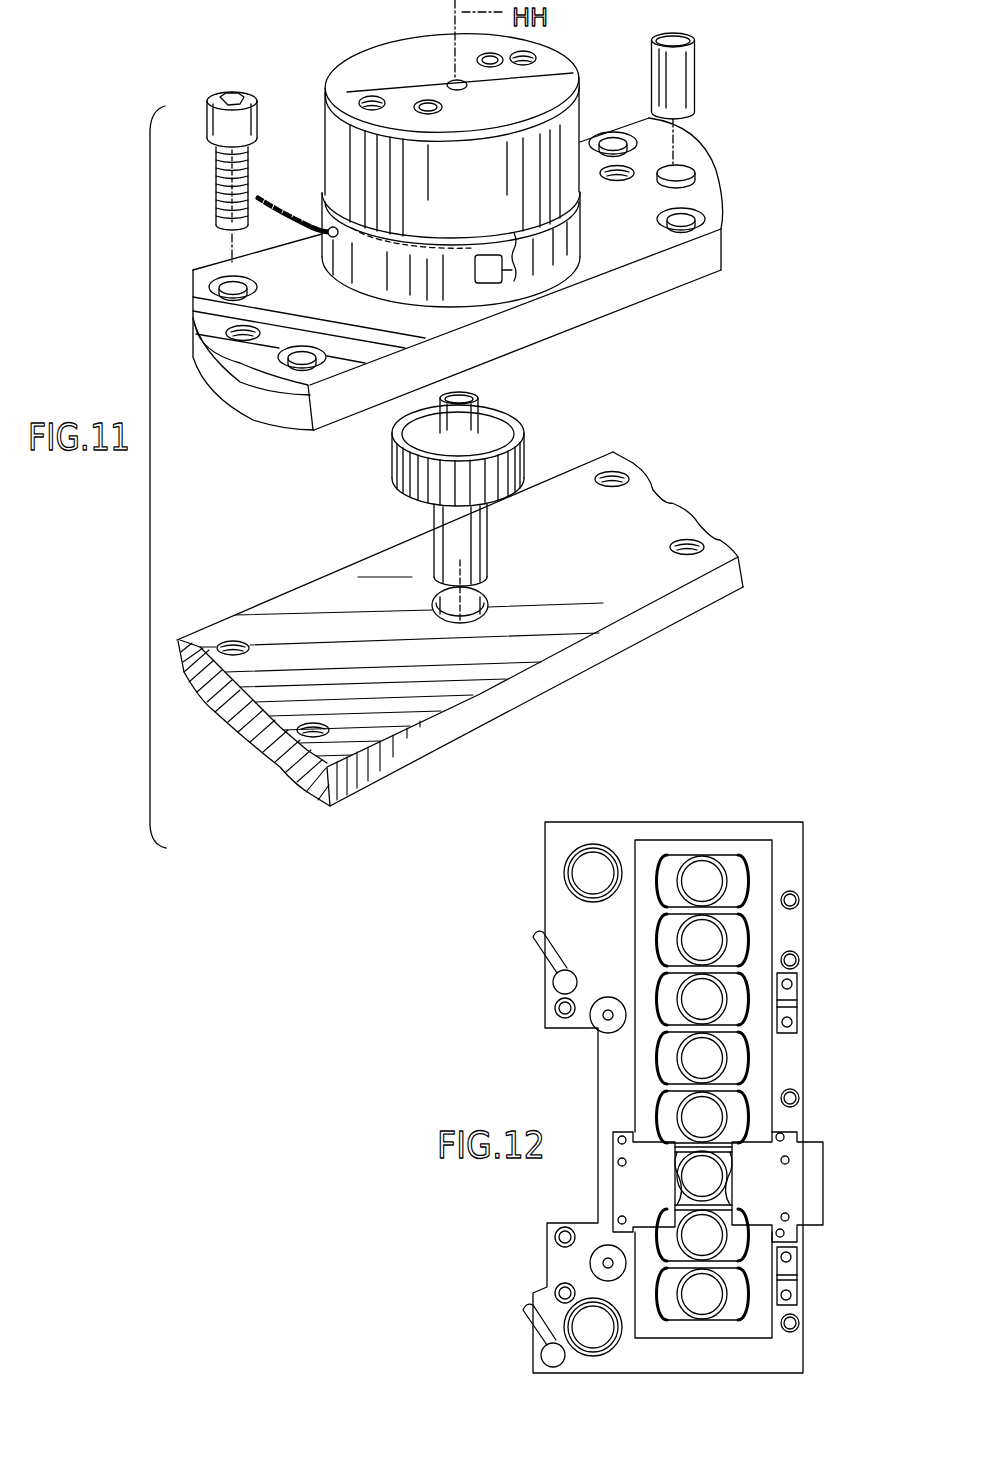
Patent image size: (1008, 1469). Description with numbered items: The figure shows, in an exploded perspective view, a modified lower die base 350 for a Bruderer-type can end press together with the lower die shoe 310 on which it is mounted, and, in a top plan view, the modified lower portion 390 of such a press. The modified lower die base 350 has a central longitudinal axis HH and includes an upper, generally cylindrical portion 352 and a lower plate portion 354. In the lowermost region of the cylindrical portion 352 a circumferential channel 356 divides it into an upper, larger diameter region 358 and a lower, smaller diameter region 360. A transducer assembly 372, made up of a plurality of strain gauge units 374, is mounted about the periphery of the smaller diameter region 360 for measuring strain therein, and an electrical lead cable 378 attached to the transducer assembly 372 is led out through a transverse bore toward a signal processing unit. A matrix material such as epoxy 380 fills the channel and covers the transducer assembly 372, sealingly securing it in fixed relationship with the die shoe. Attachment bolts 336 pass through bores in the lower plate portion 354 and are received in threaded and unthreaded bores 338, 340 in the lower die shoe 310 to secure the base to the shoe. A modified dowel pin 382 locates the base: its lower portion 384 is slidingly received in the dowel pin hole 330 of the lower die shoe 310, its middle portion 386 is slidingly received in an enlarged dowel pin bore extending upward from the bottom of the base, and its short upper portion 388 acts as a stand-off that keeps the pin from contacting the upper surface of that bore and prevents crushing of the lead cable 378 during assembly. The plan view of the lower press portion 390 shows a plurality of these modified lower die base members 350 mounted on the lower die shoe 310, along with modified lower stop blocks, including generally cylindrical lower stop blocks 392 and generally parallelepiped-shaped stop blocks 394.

In FIG. 11, the attachment bolt 336 is at (241, 93).
In FIG. 11, the upper, generally cylindrical portion 352 is at (325, 118).
In FIG. 11, the electrical lead cable 378 is at (292, 182).
In FIG. 11, the modified lower die base 350 is at (621, 16).
In FIG. 12, the modified lower die base 350 is at (756, 942).
In FIG. 11, the upper, larger diameter region 358 is at (579, 107).
In FIG. 11, the lower plate portion 354 is at (701, 194).
In FIG. 11, the lower, smaller diameter region 360 is at (475, 252).
In FIG. 11, the transducer assembly 372 is at (483, 260).
In FIG. 11, the strain gauge unit 374 is at (509, 257).
In FIG. 11, the epoxy 380 is at (561, 268).
In FIG. 11, the circumferential channel 356 is at (483, 295).
In FIG. 11, the bore 340 is at (232, 327).
In FIG. 11, the upper portion 388 is at (482, 411).
In FIG. 11, the modified dowel pin 382 is at (533, 437).
In FIG. 11, the middle portion 386 is at (520, 466).
In FIG. 11, the lower portion 384 is at (436, 545).
In FIG. 11, the dowel pin hole 330 is at (438, 592).
In FIG. 11, the bore 338 is at (220, 645).
In FIG. 11, the lower die shoe 310 is at (391, 778).
In FIG. 12, the lower die shoe 310 is at (772, 820).
In FIG. 12, the lower portion of press 390 is at (686, 818).
In FIG. 12, the cylindrical lower stop block 392 is at (798, 994).
In FIG. 12, the parallelepiped-shaped stop block 394 is at (798, 1265).